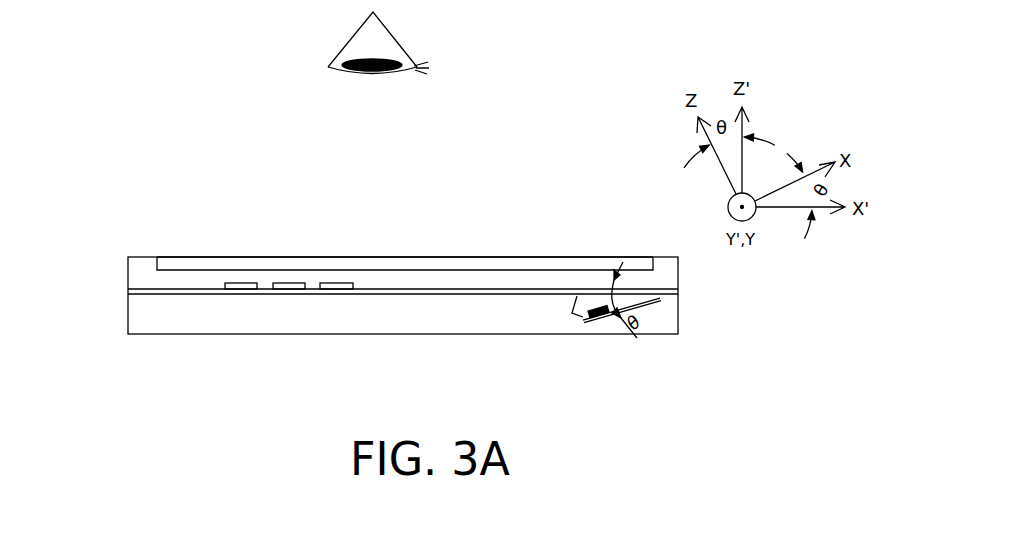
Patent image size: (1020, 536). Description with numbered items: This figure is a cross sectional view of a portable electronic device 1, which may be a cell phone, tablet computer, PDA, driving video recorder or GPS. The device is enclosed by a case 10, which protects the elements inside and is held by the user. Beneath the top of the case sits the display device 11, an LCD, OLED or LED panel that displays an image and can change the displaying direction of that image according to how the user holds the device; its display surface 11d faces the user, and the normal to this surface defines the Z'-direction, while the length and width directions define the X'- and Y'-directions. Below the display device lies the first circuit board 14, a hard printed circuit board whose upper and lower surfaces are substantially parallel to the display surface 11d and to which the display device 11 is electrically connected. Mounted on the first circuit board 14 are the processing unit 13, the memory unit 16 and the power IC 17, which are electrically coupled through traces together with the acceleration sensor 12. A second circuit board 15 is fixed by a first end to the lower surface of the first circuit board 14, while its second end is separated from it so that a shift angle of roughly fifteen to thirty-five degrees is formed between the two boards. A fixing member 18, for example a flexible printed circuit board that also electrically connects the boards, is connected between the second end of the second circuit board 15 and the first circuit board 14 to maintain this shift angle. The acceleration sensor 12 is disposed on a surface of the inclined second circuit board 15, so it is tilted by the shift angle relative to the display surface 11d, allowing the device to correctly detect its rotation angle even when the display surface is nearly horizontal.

The portable electronic device 1 is at (230, 89).
The case 10 is at (140, 257).
The display device 11 is at (195, 262).
The display surface 11d is at (513, 247).
The acceleration sensor 12 is at (598, 307).
The processing unit 13 is at (248, 283).
The first circuit board 14 is at (128, 292).
The second circuit board 15 is at (586, 322).
The memory unit 16 is at (298, 283).
The power IC 17 is at (348, 283).
The fixing member 18 is at (573, 318).